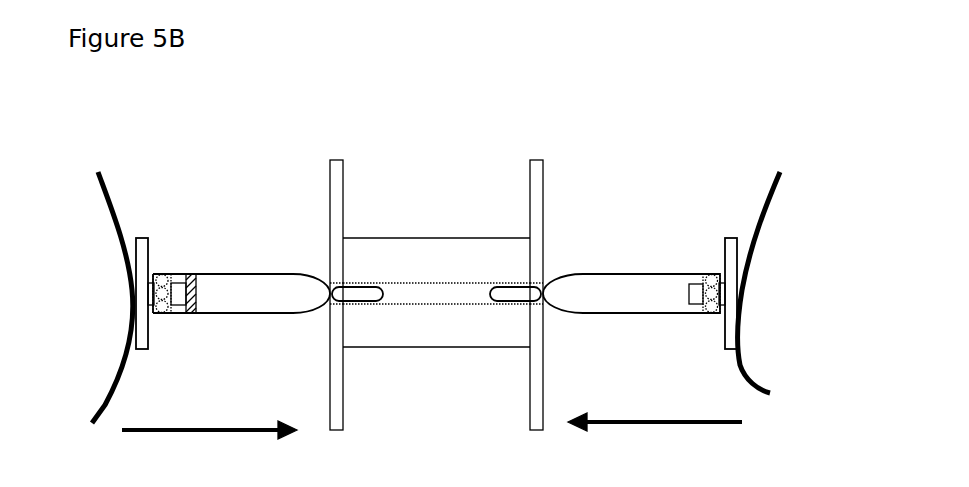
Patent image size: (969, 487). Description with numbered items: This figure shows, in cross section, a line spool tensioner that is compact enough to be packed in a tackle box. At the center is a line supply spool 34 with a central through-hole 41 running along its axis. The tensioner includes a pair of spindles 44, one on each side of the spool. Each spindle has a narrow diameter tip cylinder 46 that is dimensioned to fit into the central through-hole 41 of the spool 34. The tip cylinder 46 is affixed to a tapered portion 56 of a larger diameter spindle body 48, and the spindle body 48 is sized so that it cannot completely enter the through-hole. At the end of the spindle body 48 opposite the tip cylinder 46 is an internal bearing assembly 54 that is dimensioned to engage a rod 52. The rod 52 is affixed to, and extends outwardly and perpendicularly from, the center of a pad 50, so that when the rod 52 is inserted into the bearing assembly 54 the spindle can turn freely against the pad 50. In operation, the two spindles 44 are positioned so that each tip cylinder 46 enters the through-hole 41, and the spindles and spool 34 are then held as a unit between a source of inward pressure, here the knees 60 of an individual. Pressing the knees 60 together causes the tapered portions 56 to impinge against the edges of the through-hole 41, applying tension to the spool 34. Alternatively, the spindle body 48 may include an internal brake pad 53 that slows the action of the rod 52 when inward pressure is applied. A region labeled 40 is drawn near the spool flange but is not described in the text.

The spool 34 is at (340, 135).
The flange opening 40 is at (342, 280).
The central through-hole 41 is at (465, 280).
The spindles 44 is at (432, 233).
The narrow diameter tip cylinder 46 is at (352, 295).
The spindle body 48 is at (265, 297).
The pad 50 is at (149, 237).
The rod 52 is at (155, 273).
The internal brake pad 53 is at (195, 273).
The internal bearing assembly 54 is at (183, 305).
The tapered portion 56 is at (317, 293).
The knees 60 is at (122, 397).